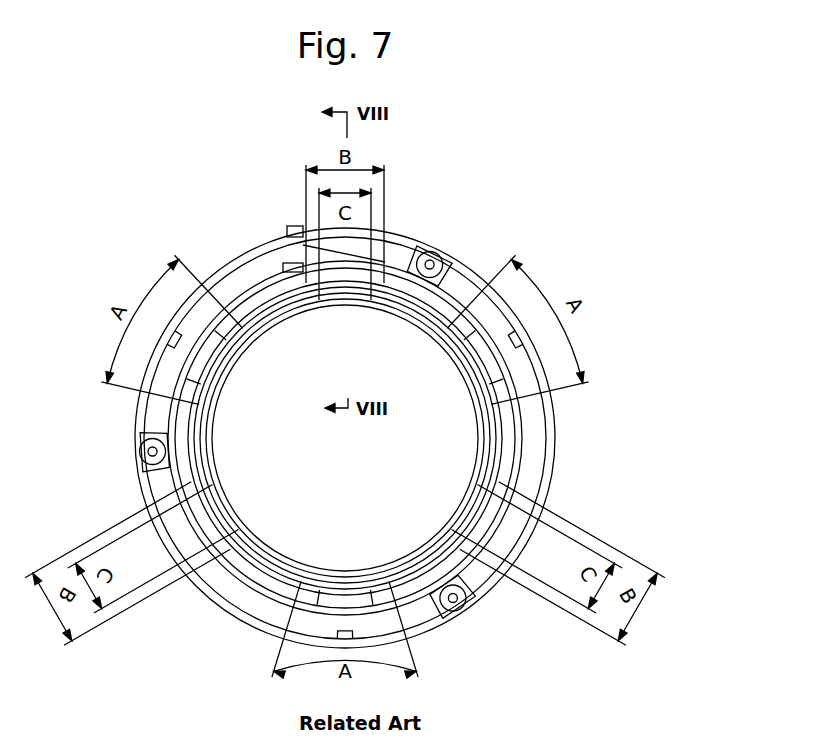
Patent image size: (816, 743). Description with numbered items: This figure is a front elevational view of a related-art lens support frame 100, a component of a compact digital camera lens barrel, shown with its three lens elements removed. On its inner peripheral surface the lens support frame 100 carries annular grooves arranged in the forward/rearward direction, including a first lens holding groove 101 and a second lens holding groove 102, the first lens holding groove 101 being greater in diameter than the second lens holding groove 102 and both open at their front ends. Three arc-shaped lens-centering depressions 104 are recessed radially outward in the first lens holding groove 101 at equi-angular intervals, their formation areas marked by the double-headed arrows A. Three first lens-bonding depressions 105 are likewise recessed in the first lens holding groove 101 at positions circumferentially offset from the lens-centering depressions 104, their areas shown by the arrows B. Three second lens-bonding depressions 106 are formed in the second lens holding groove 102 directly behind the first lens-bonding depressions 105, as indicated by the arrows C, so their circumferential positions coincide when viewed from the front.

The lens support frame 100 is at (408, 248).
The first lens holding groove 101 is at (207, 455).
The second lens holding groove 102 is at (396, 300).
The lens-centering depression 104 is at (224, 324).
The first lens-bonding depression 105 is at (341, 290).
The second lens-bonding depression 106 is at (326, 292).